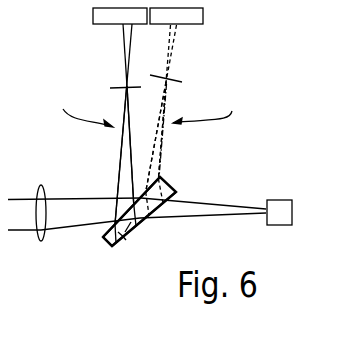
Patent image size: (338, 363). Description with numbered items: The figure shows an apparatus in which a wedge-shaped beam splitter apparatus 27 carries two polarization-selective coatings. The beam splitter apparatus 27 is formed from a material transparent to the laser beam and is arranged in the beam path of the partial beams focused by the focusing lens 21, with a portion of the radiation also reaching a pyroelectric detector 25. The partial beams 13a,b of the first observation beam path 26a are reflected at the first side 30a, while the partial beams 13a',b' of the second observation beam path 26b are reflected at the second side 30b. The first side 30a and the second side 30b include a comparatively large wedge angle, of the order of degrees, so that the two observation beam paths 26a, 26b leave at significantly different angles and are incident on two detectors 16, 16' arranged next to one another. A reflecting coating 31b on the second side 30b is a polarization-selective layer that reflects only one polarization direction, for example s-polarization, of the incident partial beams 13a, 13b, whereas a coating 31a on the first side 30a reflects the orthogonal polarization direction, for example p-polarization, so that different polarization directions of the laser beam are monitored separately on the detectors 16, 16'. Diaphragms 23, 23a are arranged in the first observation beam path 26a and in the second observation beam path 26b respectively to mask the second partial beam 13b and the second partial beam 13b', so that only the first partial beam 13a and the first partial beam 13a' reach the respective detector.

The detector 16 is at (92, 16).
The detector 16' is at (205, 16).
The first partial beam 13a is at (91, 55).
The first partial beam 13a' is at (208, 53).
The diaphragm 23 is at (113, 87).
The diaphragm 23a is at (174, 78).
The first observation beam path 26a is at (72, 109).
The second observation beam path 26b is at (215, 107).
The partial beams 13a,b is at (125, 147).
The second partial beam 13b is at (124, 155).
The partial beams 13a',b' is at (205, 148).
The second partial beam 13b' is at (156, 137).
The focusing lens 21 is at (39, 188).
The pyroelectric detector 25 is at (279, 205).
The beam splitter apparatus 27 is at (179, 189).
The first side 30a is at (155, 180).
The second side 30b is at (152, 203).
The coating 31a is at (117, 242).
The reflecting coating 31b is at (130, 235).